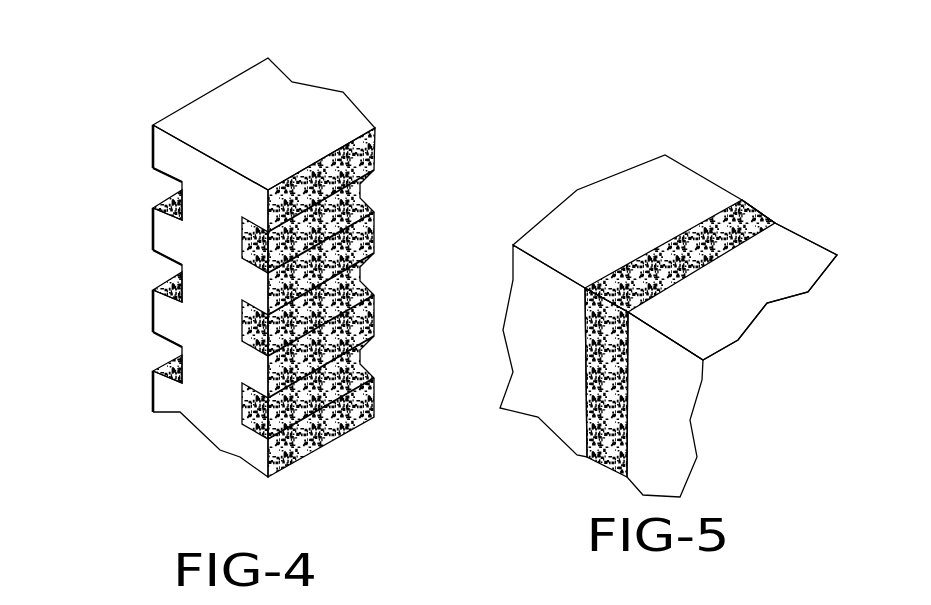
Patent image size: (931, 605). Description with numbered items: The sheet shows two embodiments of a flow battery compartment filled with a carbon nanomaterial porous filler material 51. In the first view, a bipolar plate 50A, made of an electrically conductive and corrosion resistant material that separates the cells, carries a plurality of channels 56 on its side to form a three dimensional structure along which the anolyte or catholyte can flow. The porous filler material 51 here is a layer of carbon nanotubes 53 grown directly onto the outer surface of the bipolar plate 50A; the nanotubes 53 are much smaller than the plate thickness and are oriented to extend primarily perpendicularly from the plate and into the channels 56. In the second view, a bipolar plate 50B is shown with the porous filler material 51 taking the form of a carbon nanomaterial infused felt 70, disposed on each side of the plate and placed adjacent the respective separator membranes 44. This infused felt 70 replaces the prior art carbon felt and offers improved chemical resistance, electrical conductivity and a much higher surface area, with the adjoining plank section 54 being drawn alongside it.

In FIG. 4, the bipolar plate 50A is at (292, 130).
In FIG. 4, the carbon nanotubes 53 is at (153, 125).
In FIG. 4, the channels 56 is at (143, 192).
In FIG. 4, the porous filler material 51 is at (147, 333).
In FIG. 5, the porous filler material 51 is at (650, 262).
In FIG. 5, the separator membranes 44 is at (535, 333).
In FIG. 5, the second plank section 54 is at (742, 250).
In FIG. 5, the bipolar plate 50B is at (662, 378).
In FIG. 5, the carbon nanomaterial infused felt 70 is at (748, 193).